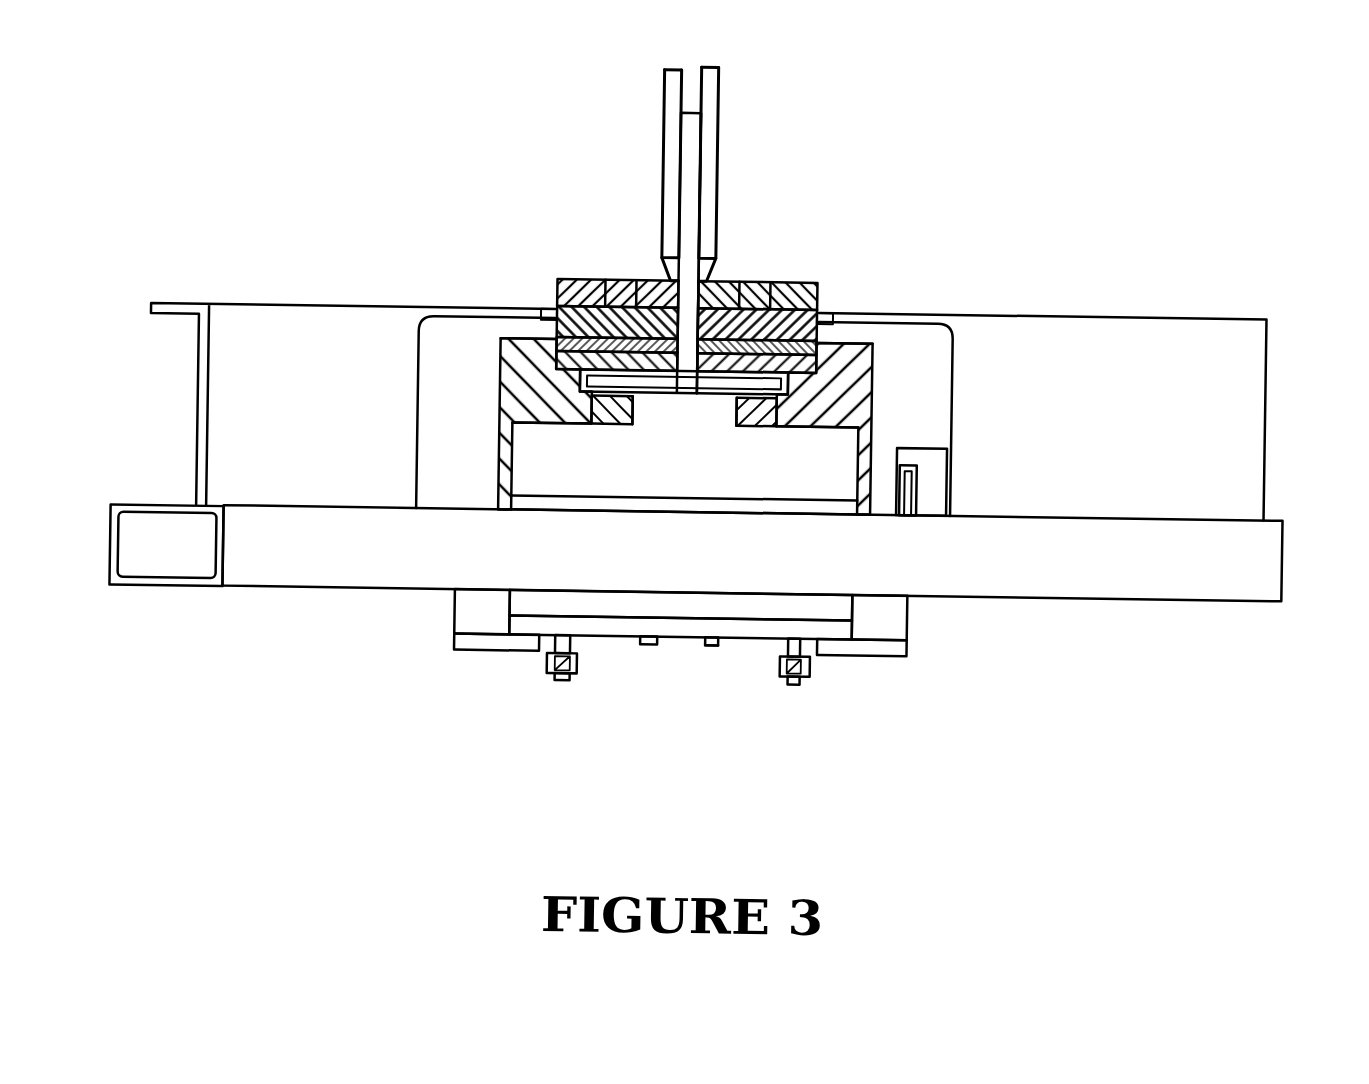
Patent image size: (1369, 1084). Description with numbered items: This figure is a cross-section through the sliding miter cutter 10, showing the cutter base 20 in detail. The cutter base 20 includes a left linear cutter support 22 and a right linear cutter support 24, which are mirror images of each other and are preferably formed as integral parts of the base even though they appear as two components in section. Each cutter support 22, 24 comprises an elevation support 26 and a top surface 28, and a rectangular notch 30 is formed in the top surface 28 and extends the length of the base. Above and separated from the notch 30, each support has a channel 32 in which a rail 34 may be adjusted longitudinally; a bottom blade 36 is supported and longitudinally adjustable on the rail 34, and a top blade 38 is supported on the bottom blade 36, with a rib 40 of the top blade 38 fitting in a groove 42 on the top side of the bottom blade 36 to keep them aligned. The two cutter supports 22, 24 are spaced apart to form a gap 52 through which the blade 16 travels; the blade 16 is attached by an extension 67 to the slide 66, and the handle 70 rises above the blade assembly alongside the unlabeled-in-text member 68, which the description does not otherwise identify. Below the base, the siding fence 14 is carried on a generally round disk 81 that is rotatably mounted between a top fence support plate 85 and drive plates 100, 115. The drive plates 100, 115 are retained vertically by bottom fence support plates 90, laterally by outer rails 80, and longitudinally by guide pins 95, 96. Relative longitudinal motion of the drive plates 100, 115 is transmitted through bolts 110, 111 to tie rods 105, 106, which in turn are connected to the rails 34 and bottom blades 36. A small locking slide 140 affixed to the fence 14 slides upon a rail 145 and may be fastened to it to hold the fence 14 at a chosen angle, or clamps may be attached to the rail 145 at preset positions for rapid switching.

The sliding miter cutter 10 is at (930, 99).
The fence 14 is at (194, 425).
The blade 16 is at (685, 132).
The cutter base 20 is at (735, 418).
The left linear cutter support 22 is at (499, 384).
The right linear cutter support 24 is at (871, 385).
The elevation support 26 is at (512, 465).
The top surface 28 is at (499, 343).
The notch 30 is at (608, 424).
The channel 32 is at (545, 318).
The rail 34 is at (554, 346).
The bottom blade 36 is at (554, 316).
The top blade 38 is at (554, 283).
The rib 40 is at (602, 279).
The groove 42 is at (634, 281).
The gap 52 is at (663, 268).
The slide 66 is at (722, 387).
The extension 67 is at (700, 268).
The outer tube 68 is at (668, 152).
The handle 70 is at (660, 94).
The outer rails 80 is at (457, 604).
The round disk 81 is at (542, 609).
The top fence support plate 85 is at (537, 506).
The bottom fence support plates 90 is at (480, 653).
The guide pin 95 is at (710, 647).
The guide pin 96 is at (646, 645).
The drive plate 100 is at (586, 641).
The tie rod 105 is at (548, 667).
The tie rod 106 is at (816, 673).
The bolt 110 is at (564, 682).
The bolt 111 is at (797, 686).
The drive plate 115 is at (780, 641).
The locking slide 140 is at (933, 493).
The rail 145 is at (918, 470).